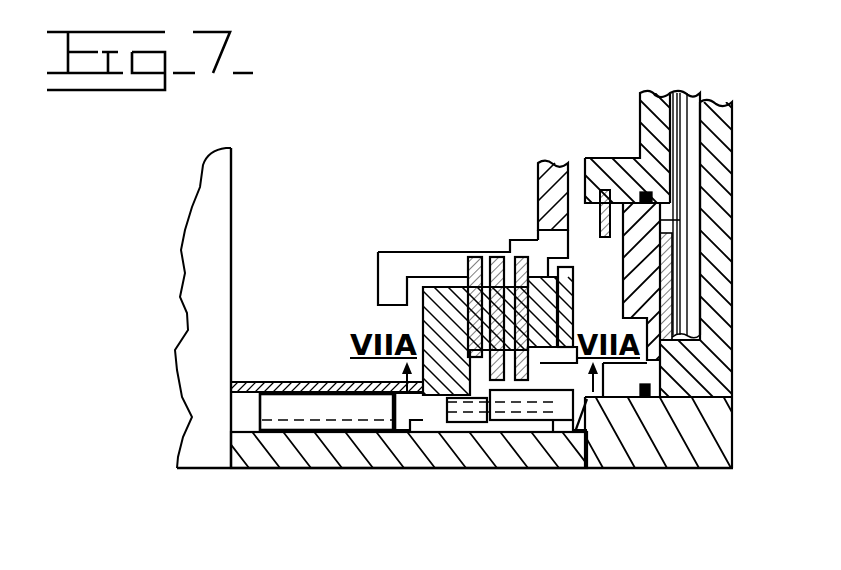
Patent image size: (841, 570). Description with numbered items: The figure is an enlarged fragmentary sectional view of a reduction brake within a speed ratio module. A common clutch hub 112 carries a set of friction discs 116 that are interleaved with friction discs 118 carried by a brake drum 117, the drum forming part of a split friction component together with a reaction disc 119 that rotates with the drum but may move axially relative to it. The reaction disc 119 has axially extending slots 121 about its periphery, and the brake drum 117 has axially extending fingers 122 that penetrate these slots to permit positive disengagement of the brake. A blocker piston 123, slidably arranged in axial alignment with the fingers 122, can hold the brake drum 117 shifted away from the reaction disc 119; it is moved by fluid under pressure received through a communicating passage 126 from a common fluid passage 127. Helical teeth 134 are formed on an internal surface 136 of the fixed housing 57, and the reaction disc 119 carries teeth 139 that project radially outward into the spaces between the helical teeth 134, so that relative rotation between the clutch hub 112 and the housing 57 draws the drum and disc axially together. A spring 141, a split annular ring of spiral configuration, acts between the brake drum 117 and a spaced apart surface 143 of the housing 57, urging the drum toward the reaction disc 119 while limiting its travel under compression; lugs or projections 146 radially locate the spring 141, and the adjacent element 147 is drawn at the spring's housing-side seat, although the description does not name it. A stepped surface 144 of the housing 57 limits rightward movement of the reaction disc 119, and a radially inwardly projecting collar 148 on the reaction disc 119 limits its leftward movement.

The fixed housing 57 is at (360, 455).
The common clutch hub 112 is at (393, 263).
The friction discs 116 is at (520, 262).
The brake drum 117 is at (437, 305).
The friction discs 118 is at (503, 332).
The reaction disc 119 is at (555, 315).
The axially extending slots 121 is at (556, 352).
The axially extending fingers 122 is at (595, 412).
The blocker piston 123 is at (643, 362).
The communicating passage 126 is at (660, 225).
The common fluid passage 127 is at (690, 117).
The helical teeth 134 is at (503, 418).
The internal surface 136 is at (413, 430).
The teeth 139 is at (573, 400).
The spring 141 is at (258, 385).
The spaced apart surface 143 is at (231, 245).
The stepped surface 144 is at (583, 410).
The lugs or projections 146 is at (305, 408).
The guide 147 is at (282, 457).
The radially inwardly projecting collar 148 is at (547, 260).